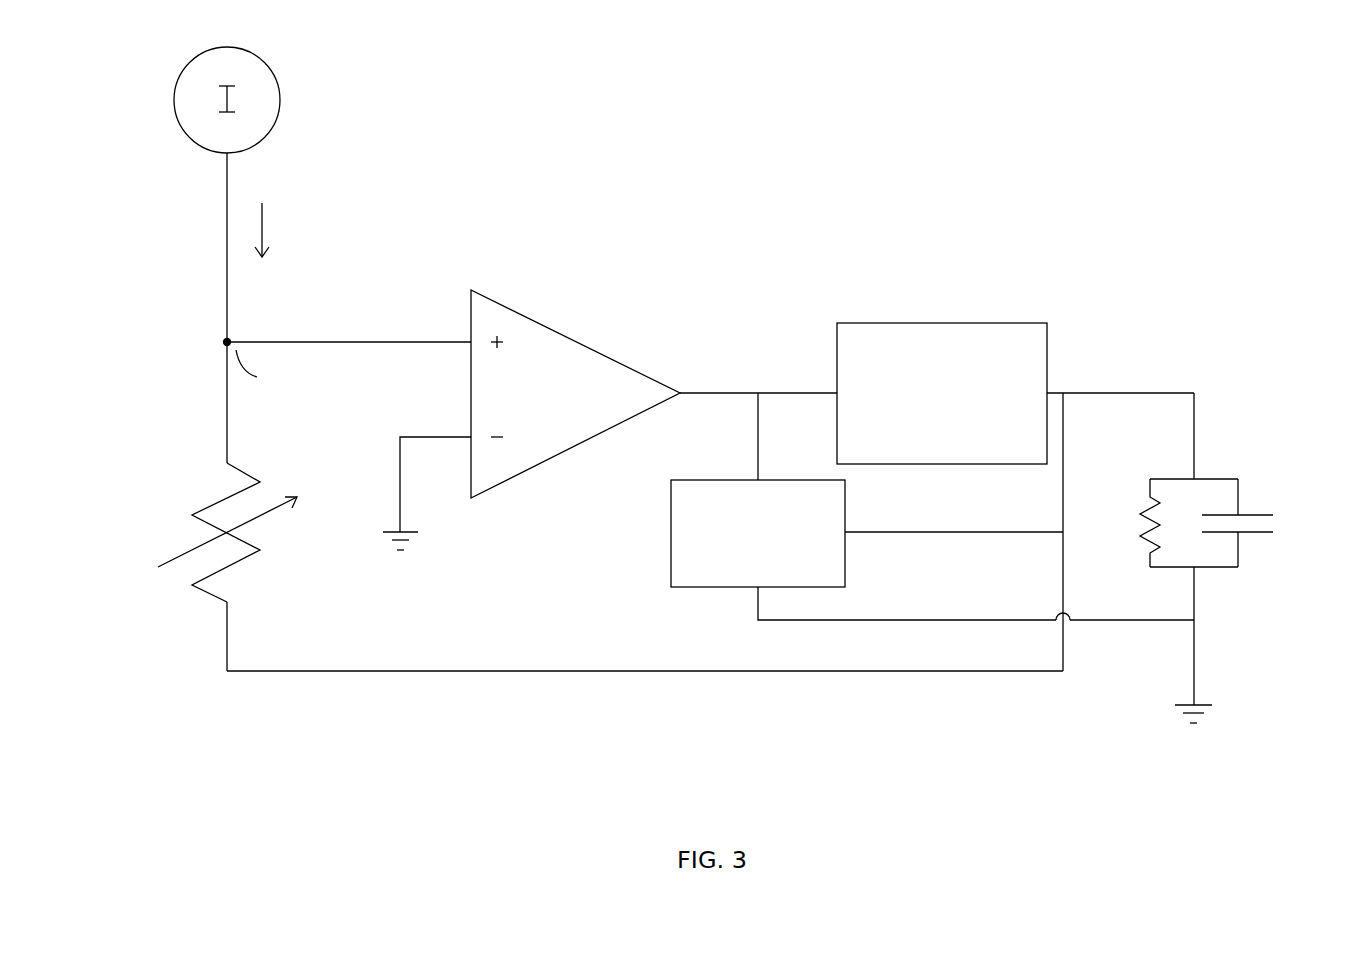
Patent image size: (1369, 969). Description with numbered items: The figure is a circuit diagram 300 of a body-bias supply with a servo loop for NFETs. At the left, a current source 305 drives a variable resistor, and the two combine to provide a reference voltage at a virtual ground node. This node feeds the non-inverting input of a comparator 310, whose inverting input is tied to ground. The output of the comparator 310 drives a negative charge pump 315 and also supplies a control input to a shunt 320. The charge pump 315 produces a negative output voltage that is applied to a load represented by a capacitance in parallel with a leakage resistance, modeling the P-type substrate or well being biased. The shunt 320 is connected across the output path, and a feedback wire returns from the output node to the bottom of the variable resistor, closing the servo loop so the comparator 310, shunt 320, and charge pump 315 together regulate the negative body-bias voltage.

The circuit diagram 300 is at (1223, 73).
The current source 305 is at (247, 142).
The comparator 310 is at (578, 405).
The charge pump 315 is at (1031, 456).
The shunt 320 is at (836, 578).